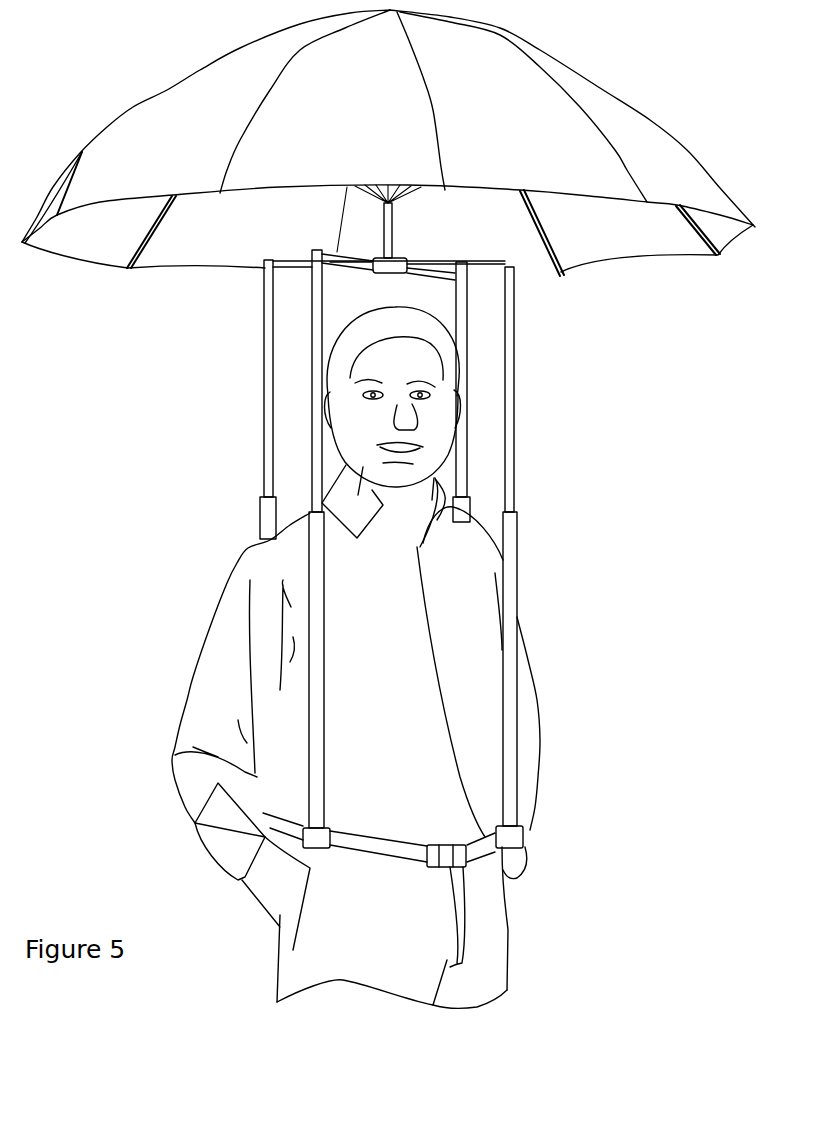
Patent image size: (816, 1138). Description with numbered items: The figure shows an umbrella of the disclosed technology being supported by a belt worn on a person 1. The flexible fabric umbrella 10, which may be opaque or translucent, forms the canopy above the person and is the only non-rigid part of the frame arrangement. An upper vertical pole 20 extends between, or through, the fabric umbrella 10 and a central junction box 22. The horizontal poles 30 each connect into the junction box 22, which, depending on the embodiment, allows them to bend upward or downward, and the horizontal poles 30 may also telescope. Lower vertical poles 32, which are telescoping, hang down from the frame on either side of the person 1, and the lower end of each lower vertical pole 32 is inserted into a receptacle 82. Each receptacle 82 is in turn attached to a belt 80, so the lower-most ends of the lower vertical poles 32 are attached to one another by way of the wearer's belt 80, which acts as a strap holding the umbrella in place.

The user wearing the umbrella support 1 is at (220, 678).
The fabric umbrella 10 is at (185, 112).
The upper vertical pole 20 is at (388, 215).
The junction box 22 is at (403, 273).
The horizontal poles 30 is at (287, 267).
The lower vertical poles 32 is at (510, 388).
The belt 80 is at (480, 848).
The receptacle 82 is at (517, 832).